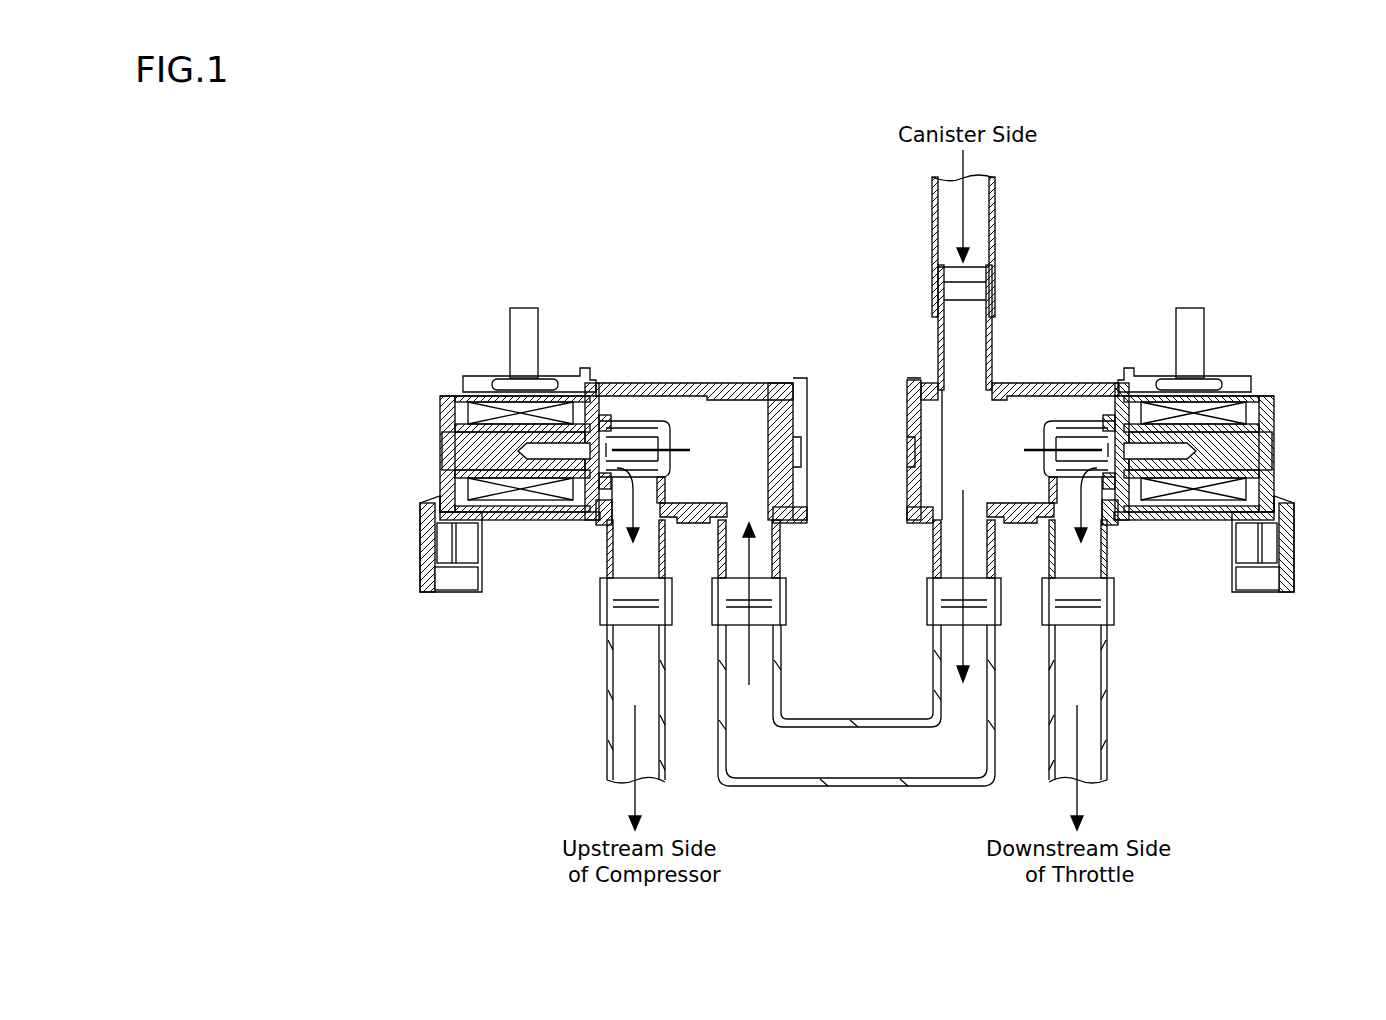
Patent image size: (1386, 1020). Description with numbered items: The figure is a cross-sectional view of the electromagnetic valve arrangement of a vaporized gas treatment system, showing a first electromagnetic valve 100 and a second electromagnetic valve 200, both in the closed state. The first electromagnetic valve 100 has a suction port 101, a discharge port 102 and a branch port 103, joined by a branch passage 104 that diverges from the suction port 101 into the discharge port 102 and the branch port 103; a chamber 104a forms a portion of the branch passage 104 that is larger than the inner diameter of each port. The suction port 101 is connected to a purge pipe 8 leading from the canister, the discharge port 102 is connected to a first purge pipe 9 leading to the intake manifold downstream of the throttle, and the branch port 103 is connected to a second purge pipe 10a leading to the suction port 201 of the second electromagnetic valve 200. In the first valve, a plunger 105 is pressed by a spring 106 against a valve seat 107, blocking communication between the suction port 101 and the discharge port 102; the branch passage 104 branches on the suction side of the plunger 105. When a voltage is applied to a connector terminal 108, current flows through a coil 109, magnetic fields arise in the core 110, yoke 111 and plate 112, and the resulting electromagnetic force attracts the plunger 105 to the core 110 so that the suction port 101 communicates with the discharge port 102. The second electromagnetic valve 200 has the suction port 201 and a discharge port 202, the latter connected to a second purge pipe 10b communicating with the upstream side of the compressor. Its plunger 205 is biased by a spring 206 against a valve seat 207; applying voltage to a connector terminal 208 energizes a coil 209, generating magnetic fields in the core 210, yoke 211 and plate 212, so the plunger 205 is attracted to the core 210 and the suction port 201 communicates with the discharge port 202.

The purge pipe 8 is at (996, 218).
The first purge pipe 9 is at (1107, 672).
The second purge pipe 10a is at (843, 720).
The second purge pipe 10b is at (607, 693).
The first electromagnetic valve 100 is at (1206, 189).
The suction port 101 is at (993, 342).
The discharge port 102 is at (1107, 553).
The branch port 103 is at (933, 564).
The branch passage 104 is at (897, 483).
The chamber 104a is at (953, 416).
The plunger 105 is at (1111, 423).
The spring 106 is at (1146, 397).
The valve seat 107 is at (1080, 437).
The connector terminal 108 is at (1285, 542).
The coil 109 is at (1274, 488).
The core 110 is at (1274, 445).
The yoke 111 is at (1252, 381).
The plate 112 is at (1120, 523).
The second electromagnetic valve 200 is at (706, 227).
The suction port 201 is at (782, 555).
The discharge port 202 is at (607, 553).
The plunger 205 is at (603, 423).
The spring 206 is at (568, 397).
The valve seat 207 is at (642, 437).
The connector terminal 208 is at (430, 578).
The coil 209 is at (441, 488).
The core 210 is at (441, 445).
The yoke 211 is at (462, 381).
The plate 212 is at (592, 523).